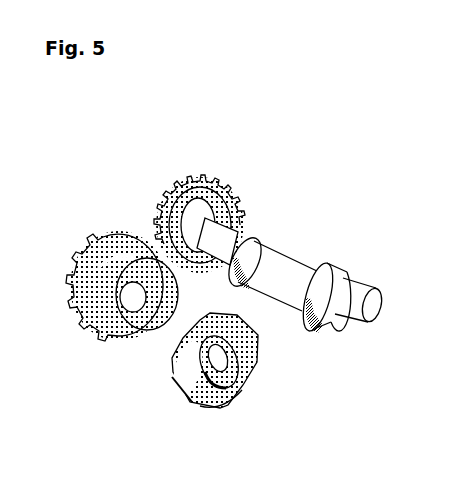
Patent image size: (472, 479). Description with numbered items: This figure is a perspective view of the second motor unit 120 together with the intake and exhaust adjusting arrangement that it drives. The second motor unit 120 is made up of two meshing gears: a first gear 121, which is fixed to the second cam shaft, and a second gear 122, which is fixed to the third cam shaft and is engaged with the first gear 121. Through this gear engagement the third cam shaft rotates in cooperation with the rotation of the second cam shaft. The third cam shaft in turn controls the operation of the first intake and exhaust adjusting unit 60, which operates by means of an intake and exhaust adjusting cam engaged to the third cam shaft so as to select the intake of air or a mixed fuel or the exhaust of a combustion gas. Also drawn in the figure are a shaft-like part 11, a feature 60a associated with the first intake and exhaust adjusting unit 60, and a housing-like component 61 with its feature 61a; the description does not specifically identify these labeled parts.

The second motor unit 120 is at (193, 130).
The first gear 121 is at (192, 176).
The second gear 122 is at (142, 232).
The first intake and exhaust adjusting unit 60 is at (237, 243).
The gear hub 60a is at (167, 290).
The shaft 11 is at (322, 263).
The bearing 61 is at (180, 353).
The bearing bore 61a is at (222, 410).